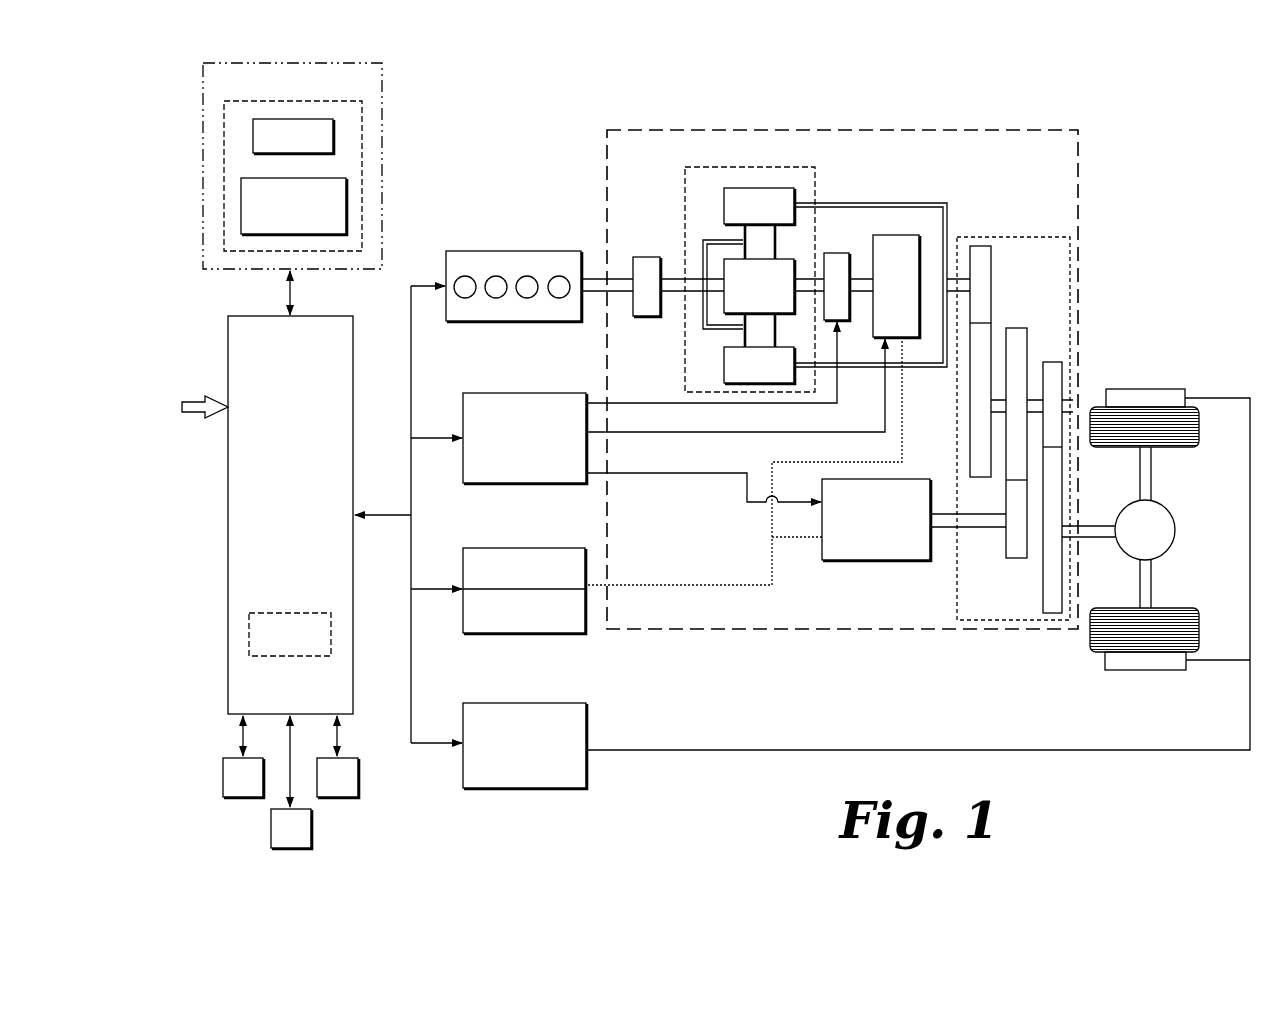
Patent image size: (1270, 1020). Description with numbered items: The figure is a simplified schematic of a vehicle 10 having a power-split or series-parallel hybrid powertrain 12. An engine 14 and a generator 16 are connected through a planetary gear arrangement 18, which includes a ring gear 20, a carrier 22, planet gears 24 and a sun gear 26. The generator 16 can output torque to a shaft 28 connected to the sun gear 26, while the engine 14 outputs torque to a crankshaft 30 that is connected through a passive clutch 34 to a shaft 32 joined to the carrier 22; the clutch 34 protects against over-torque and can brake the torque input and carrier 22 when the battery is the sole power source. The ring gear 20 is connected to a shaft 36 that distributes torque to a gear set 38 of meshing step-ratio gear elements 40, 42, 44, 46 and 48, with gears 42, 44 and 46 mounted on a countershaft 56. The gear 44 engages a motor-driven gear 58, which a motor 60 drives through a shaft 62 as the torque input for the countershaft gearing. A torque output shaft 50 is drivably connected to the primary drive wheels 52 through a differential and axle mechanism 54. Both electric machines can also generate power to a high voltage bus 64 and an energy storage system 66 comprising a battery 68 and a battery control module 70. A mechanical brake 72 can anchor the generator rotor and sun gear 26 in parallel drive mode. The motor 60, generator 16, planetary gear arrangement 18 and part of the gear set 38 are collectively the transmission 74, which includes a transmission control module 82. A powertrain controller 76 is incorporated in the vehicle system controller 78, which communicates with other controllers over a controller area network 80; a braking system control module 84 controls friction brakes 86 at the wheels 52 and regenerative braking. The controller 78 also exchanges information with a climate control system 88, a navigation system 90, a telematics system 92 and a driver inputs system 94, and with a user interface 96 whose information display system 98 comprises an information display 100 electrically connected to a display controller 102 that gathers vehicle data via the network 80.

The vehicle 10 is at (1152, 92).
The hybrid powertrain 12 is at (556, 168).
The engine 14 is at (446, 266).
The generator 16 is at (893, 235).
The planetary gear arrangement 18 is at (698, 167).
The ring gear 20 is at (724, 205).
The carrier 22 is at (704, 240).
The planet gears 24 is at (776, 245).
The sun gear 26 is at (705, 271).
The shaft 28 is at (806, 279).
The crankshaft 30 is at (597, 292).
The shaft 32 is at (676, 297).
The passive clutch 34 is at (640, 257).
The shaft 36 is at (951, 277).
The gear set 38 is at (1016, 237).
The gear element 40 is at (980, 246).
The gear element 42 is at (970, 403).
The gear element 44 is at (1016, 328).
The gear element 46 is at (1062, 400).
The gear element 48 is at (1063, 496).
The torque output shaft 50 is at (1090, 540).
The primary drive wheels 52 is at (1172, 450).
The differential and axle mechanism 54 is at (1175, 530).
The countershaft 56 is at (1032, 400).
The motor-driven gear 58 is at (1006, 542).
The motor 60 is at (878, 560).
The shaft 62 is at (960, 528).
The high voltage bus 64 is at (773, 561).
The energy storage system 66 is at (497, 546).
The battery 68 is at (568, 548).
The battery control module 70 is at (525, 633).
The mechanical brake 72 is at (850, 312).
The transmission 74 is at (975, 128).
The powertrain controller 76 is at (292, 613).
The vehicle system controller 78 is at (228, 515).
The controller area network 80 is at (411, 478).
The transmission control module 82 is at (525, 393).
The braking system control module 84 is at (523, 703).
The friction brakes 86 is at (1148, 389).
The climate control system 88 is at (243, 757).
The navigation system 90 is at (291, 782).
The telematics system 92 is at (338, 757).
The driver inputs system 94 is at (192, 398).
The user interface 96 is at (382, 92).
The information display system 98 is at (362, 176).
The information display 100 is at (253, 137).
The display controller 102 is at (241, 205).